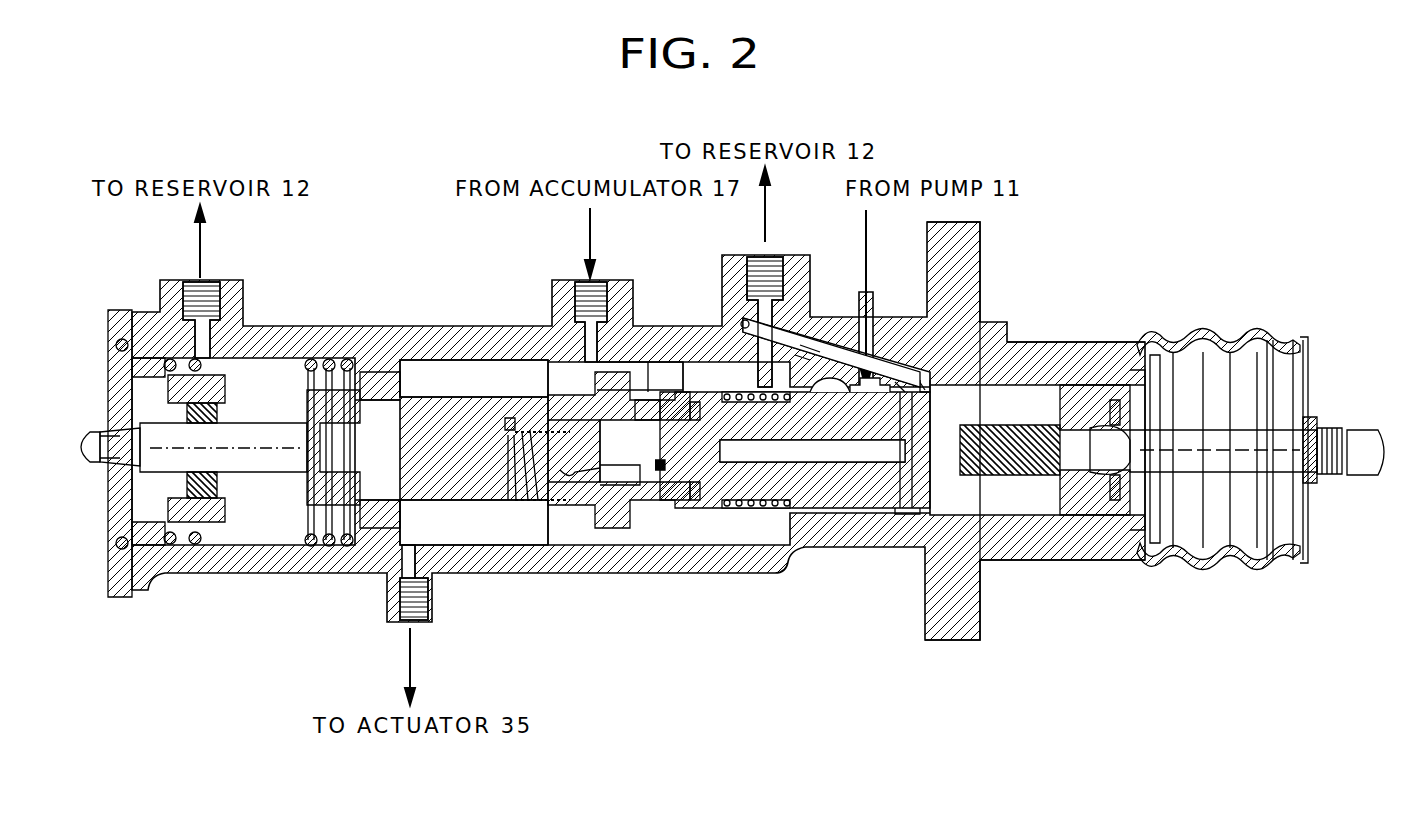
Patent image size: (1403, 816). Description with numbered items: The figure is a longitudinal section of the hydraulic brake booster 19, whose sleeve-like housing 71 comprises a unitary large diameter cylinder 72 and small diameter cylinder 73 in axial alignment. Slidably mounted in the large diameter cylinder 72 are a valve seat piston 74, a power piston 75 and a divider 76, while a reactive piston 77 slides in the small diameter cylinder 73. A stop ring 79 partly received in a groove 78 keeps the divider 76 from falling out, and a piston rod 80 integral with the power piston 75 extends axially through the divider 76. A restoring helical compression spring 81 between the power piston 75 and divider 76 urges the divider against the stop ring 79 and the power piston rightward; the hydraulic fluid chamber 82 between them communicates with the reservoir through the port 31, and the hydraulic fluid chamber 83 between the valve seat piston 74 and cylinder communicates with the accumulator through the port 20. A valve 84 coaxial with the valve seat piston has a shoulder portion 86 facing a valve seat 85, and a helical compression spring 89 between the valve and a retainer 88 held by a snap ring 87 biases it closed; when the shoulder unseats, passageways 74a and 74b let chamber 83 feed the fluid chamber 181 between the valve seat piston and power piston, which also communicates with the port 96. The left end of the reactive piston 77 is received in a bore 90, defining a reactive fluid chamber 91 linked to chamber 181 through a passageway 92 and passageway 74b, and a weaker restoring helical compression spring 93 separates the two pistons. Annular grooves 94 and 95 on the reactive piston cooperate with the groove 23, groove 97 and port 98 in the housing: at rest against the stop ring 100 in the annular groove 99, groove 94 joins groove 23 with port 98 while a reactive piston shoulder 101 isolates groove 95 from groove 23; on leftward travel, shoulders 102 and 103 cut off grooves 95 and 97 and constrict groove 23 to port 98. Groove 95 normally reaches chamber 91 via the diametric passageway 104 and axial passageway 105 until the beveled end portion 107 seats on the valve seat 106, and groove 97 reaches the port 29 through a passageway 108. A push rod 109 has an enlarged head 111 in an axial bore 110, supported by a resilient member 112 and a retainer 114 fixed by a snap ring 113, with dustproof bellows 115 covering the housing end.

The hydraulic brake booster 19 is at (884, 286).
The port 20 is at (588, 282).
The groove 23 is at (868, 320).
The port 29 is at (768, 268).
The port 31 is at (208, 290).
The sleeve-like housing 71 is at (1022, 348).
The large diameter cylinder 72 is at (640, 520).
The small diameter cylinder 73 is at (965, 520).
The valve seat piston 74 is at (620, 505).
The passageway 74a is at (640, 376).
The passageway 74b is at (524, 480).
The power piston 75 is at (345, 398).
The divider 76 is at (212, 522).
The reactive piston 77 is at (1010, 510).
The groove 78 is at (128, 333).
The stop ring 79 is at (116, 540).
The piston rod 80 is at (262, 470).
The restoring helical compression spring 81 is at (325, 522).
The hydraulic fluid chamber 82 is at (258, 385).
The hydraulic fluid chamber 83 is at (666, 365).
The valve 84 is at (630, 411).
The valve seat 85 is at (575, 430).
The shoulder portion 86 is at (596, 478).
The snap ring 87 is at (502, 428).
The retainer 88 is at (516, 420).
The helical compression spring 89 is at (558, 505).
The bore 90 is at (645, 410).
The reactive fluid chamber 91 is at (660, 495).
The passageway 92 is at (652, 480).
The restoring helical compression spring 93 is at (775, 510).
The annular groove 94 is at (835, 395).
The annular groove 95 is at (900, 382).
The port 96 is at (420, 622).
The groove 97 is at (922, 370).
The port 98 is at (822, 345).
The annular groove 99 is at (1165, 545).
The stop ring 100 is at (1165, 345).
The reactive piston shoulder 101 is at (905, 410).
The reactive piston shoulder 102 is at (935, 380).
The reactive piston shoulder 103 is at (862, 398).
The diametric passageway 104 is at (905, 508).
The axial passageway 105 is at (820, 462).
The valve seat 106 is at (696, 460).
The beveled end portion 107 is at (700, 475).
The passageway 108 is at (798, 335).
The push rod 109 is at (1285, 435).
The axial bore 110 is at (1055, 445).
The enlarged head 111 is at (1087, 407).
The resilient member 112 is at (1079, 492).
The snap ring 113 is at (1135, 370).
The retainer 114 is at (1115, 400).
The dustproof bellows 115 is at (1278, 342).
The fluid chamber 181 is at (470, 545).